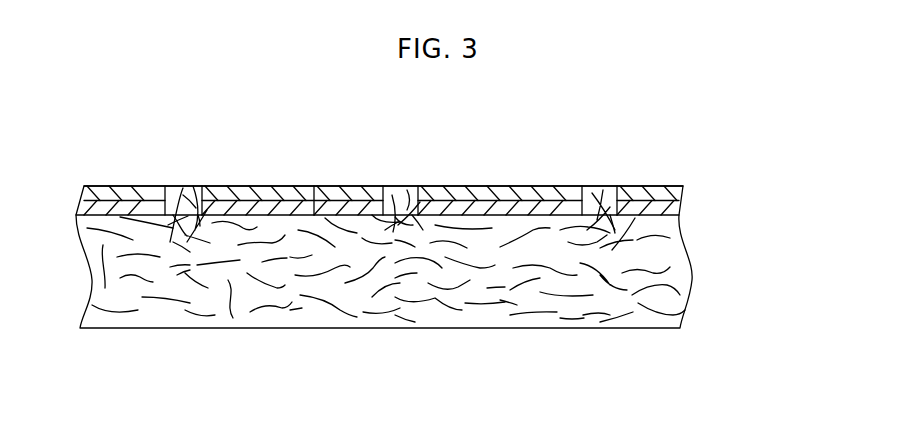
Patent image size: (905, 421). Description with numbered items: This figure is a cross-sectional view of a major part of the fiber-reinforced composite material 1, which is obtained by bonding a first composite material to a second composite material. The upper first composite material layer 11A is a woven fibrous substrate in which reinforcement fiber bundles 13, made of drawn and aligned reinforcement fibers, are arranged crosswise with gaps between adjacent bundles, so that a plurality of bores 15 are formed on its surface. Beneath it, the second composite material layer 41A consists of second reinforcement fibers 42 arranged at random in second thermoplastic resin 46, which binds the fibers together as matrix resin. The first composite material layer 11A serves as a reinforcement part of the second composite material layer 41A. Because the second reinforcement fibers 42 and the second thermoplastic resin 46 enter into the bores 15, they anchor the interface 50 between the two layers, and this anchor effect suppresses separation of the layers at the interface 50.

The fiber-reinforced composite material 1 is at (673, 157).
The first composite material layer 11A is at (487, 187).
The reinforcement fiber bundles 13 is at (250, 187).
The bores 15 is at (192, 186).
The second composite material layer 41A is at (400, 292).
The second reinforcement fibers 42 is at (388, 187).
The second thermoplastic resin 46 is at (183, 192).
The interface 50 is at (325, 187).